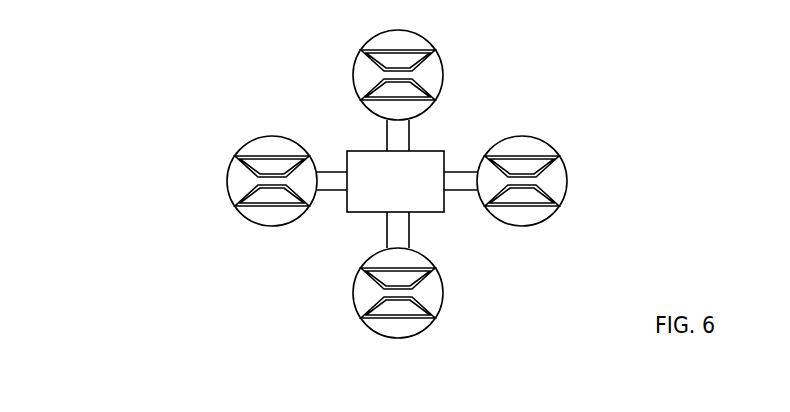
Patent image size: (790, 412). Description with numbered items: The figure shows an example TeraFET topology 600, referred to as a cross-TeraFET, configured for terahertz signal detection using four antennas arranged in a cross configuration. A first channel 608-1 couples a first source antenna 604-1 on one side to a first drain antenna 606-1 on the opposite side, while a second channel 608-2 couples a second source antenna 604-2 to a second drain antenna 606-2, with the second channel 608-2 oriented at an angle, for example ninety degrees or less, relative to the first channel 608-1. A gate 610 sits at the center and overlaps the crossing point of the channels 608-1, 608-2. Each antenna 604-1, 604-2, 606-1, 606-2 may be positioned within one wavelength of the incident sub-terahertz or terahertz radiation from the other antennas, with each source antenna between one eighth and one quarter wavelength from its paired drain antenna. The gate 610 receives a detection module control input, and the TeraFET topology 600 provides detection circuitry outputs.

The TeraFET topology 600 is at (156, 44).
The first source antenna 604-1 is at (228, 175).
The second source antenna 604-2 is at (442, 285).
The first drain antenna 606-1 is at (564, 165).
The second drain antenna 606-2 is at (445, 81).
The first channel 608-1 is at (327, 180).
The second channel 608-2 is at (398, 230).
The gate 610 is at (412, 168).